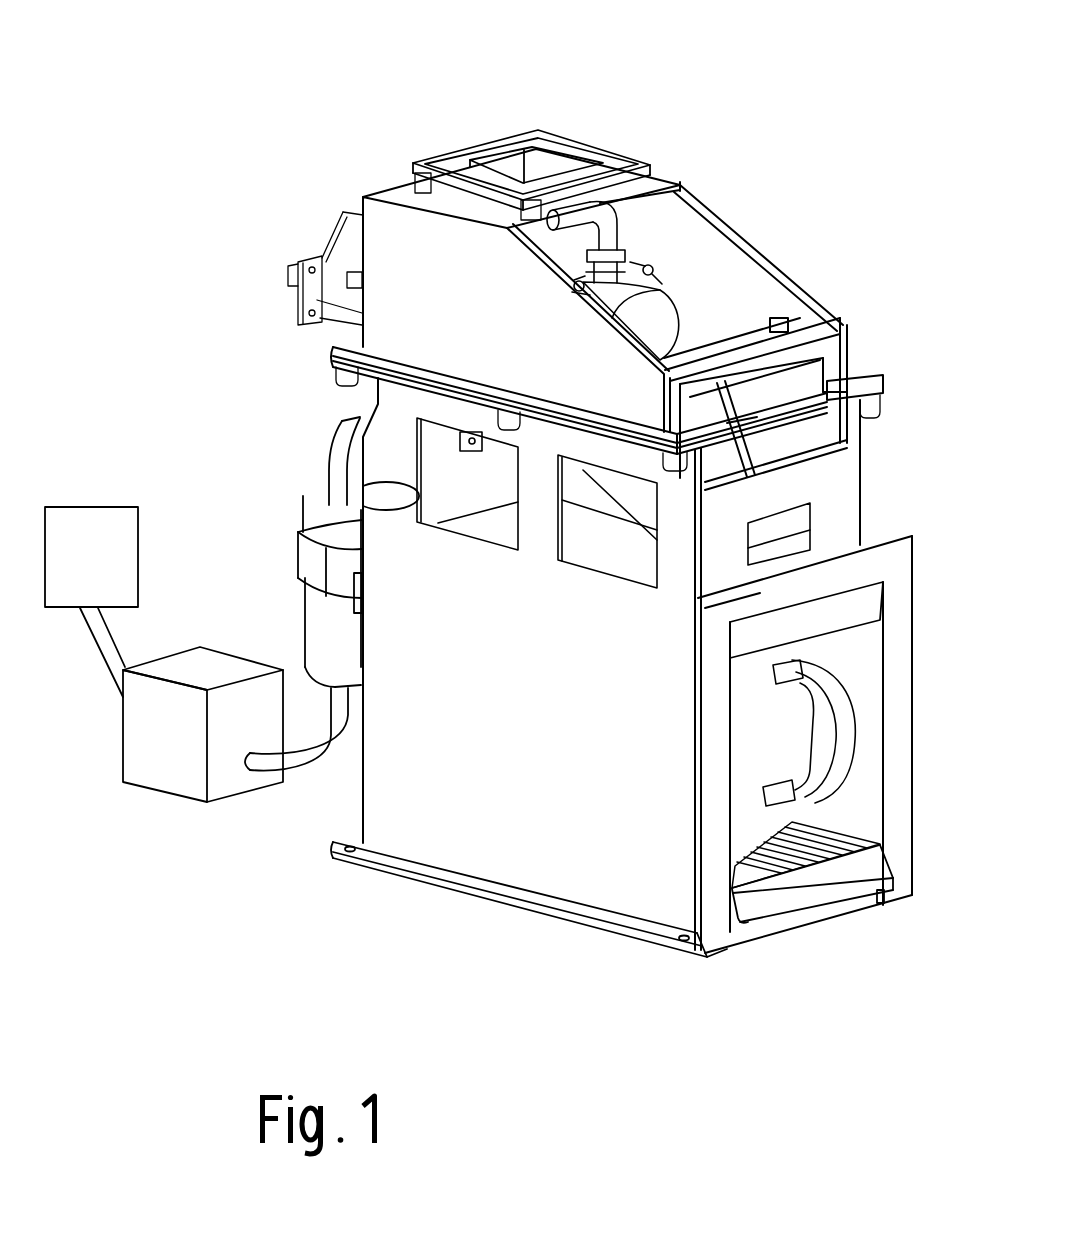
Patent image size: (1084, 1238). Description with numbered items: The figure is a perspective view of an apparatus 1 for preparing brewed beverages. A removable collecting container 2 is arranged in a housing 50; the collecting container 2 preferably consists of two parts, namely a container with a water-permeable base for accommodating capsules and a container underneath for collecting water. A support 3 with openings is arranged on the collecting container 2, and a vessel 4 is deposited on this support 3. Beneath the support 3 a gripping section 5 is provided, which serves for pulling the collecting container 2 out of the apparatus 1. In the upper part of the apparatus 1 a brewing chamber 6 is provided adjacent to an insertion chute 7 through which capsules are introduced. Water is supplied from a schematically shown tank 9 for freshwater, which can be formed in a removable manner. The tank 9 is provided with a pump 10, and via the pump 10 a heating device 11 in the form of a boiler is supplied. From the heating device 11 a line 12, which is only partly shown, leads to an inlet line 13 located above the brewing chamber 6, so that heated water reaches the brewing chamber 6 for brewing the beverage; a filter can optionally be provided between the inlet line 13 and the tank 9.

The apparatus for preparing brewed beverages 1 is at (796, 148).
The collecting container 2 is at (853, 612).
The support 3 is at (810, 842).
The vessel 4 is at (763, 728).
The gripping section 5 is at (748, 902).
The brewing chamber 6 is at (660, 340).
The insertion chute 7 is at (546, 143).
The tank 9 is at (88, 533).
The pump 10 is at (145, 728).
The heating device 11 is at (317, 643).
The line 12 is at (340, 462).
The inlet line 13 is at (603, 220).
The housing 50 is at (518, 810).